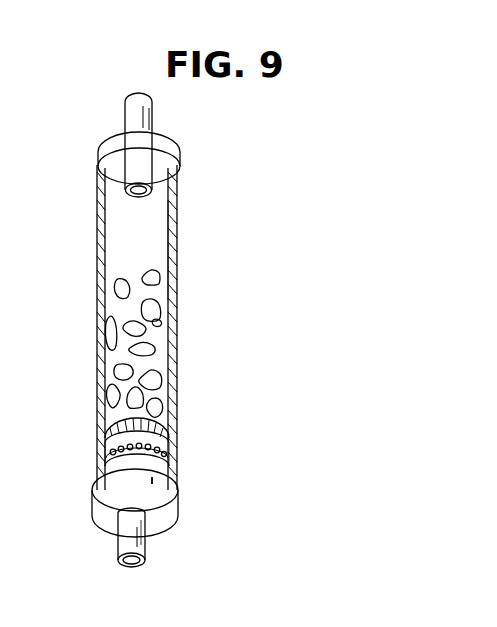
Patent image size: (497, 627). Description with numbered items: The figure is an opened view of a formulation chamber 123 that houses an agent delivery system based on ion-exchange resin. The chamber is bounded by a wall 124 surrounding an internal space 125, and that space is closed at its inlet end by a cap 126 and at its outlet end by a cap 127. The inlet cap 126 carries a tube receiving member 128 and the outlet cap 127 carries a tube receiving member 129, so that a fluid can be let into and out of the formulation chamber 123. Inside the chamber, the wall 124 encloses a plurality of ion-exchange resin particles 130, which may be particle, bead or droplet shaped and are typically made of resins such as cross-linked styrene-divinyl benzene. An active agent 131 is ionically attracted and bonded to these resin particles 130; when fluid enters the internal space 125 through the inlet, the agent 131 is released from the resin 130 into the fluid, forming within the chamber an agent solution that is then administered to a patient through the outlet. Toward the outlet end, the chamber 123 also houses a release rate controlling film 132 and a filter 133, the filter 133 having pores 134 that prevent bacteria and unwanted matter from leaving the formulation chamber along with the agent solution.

The formulation chamber 123 is at (178, 233).
The wall 124 is at (177, 263).
The chamber 125 is at (112, 206).
The cap 126 is at (98, 151).
The cap 127 is at (98, 488).
The tube receiving member 128 is at (125, 112).
The tube receiving member 129 is at (118, 546).
The ion-exchange resin particles 130 is at (110, 340).
The agent 131 is at (106, 360).
The release rate controlling film 132 is at (104, 426).
The filter 133 is at (160, 453).
The pores 134 is at (100, 470).